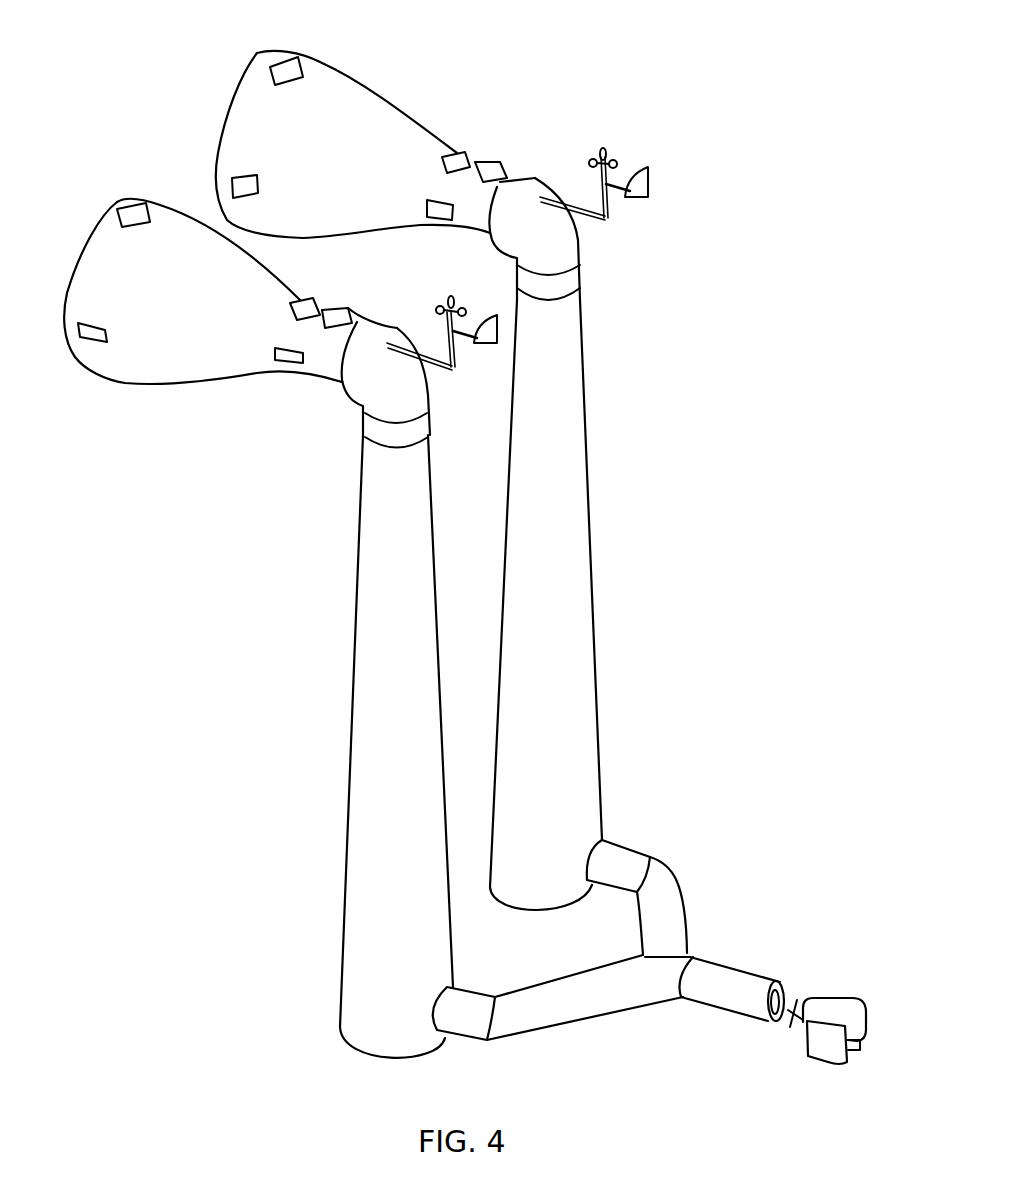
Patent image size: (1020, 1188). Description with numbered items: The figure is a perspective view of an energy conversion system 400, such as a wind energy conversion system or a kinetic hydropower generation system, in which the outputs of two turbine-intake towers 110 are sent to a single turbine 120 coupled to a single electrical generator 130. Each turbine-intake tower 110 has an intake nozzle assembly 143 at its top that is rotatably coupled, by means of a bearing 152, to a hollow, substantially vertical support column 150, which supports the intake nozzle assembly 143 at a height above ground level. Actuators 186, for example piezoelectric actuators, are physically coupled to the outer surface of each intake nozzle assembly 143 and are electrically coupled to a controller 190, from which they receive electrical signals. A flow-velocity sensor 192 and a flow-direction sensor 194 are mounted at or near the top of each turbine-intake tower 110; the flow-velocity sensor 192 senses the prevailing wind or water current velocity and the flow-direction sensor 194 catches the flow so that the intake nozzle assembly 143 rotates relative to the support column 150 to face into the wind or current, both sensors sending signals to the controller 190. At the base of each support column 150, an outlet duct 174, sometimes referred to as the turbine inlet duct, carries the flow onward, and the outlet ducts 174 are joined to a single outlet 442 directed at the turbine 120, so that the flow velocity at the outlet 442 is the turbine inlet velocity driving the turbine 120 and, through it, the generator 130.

The energy conversion system 400 is at (767, 101).
The turbine-intake tower 110 is at (563, 108).
The intake nozzle assembly 143 is at (363, 80).
The actuators 186 is at (272, 72).
The controller 190 is at (503, 172).
The flow-velocity sensor 192 is at (614, 160).
The flow-direction sensor 194 is at (630, 200).
The bearing 152 is at (567, 282).
The support column 150 is at (590, 560).
The outlet duct 174 is at (620, 843).
The outlet 442 is at (777, 1007).
The turbine 120 is at (800, 1007).
The electrical generator 130 is at (830, 1017).